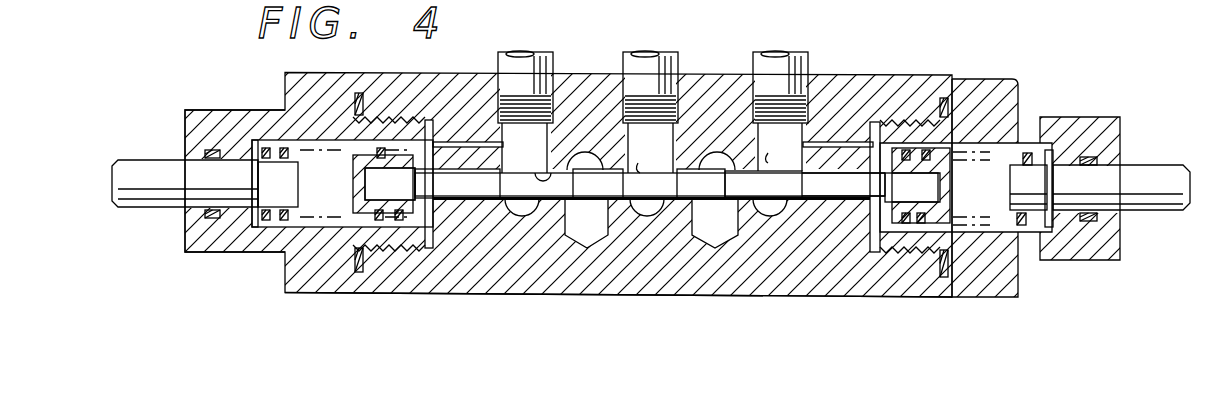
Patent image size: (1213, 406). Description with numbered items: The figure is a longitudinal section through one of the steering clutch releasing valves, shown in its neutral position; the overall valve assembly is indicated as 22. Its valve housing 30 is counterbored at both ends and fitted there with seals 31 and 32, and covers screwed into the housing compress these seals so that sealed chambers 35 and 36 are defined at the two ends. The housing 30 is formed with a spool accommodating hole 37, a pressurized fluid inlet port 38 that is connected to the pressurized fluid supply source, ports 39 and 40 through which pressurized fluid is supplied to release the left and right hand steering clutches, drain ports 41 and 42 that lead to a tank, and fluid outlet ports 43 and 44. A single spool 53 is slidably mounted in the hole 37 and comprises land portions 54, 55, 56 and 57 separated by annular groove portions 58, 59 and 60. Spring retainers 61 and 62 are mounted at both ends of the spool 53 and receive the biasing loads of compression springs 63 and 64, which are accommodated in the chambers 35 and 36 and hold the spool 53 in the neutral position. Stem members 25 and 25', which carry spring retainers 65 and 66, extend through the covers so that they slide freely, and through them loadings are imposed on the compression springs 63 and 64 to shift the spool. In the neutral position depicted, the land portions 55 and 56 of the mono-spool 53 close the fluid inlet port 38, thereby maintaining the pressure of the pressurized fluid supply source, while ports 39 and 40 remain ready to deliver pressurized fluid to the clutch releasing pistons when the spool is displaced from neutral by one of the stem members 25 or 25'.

The valve body 22 is at (912, 76).
The stem member 25 is at (205, 168).
The stem member 25' is at (1100, 182).
The valve housing 30 is at (793, 278).
The seal 31 is at (355, 272).
The seal 32 is at (938, 278).
The sealed chamber 35 is at (285, 225).
The sealed chamber 36 is at (1025, 150).
The spool accommodating hole 37 is at (500, 194).
The pressurized fluid inlet port 38 is at (680, 72).
The port 39 is at (593, 157).
The port 40 is at (720, 158).
The drain port 41 is at (553, 72).
The drain port 42 is at (808, 72).
The fluid outlet port 43 is at (475, 142).
The fluid outlet port 44 is at (845, 143).
The single spool 53 is at (822, 185).
The land portion 54 is at (437, 178).
The land portion 55 is at (604, 200).
The land portion 56 is at (655, 205).
The land portion 57 is at (852, 196).
The annular groove portion 58 is at (547, 170).
The annular groove portion 59 is at (640, 170).
The annular groove portion 60 is at (767, 170).
The spring retainer 61 is at (395, 150).
The spring retainer 62 is at (895, 150).
The compression spring 63 is at (263, 140).
The compression spring 64 is at (1044, 143).
The spring retainer 65 is at (252, 205).
The spring retainer 66 is at (1050, 232).